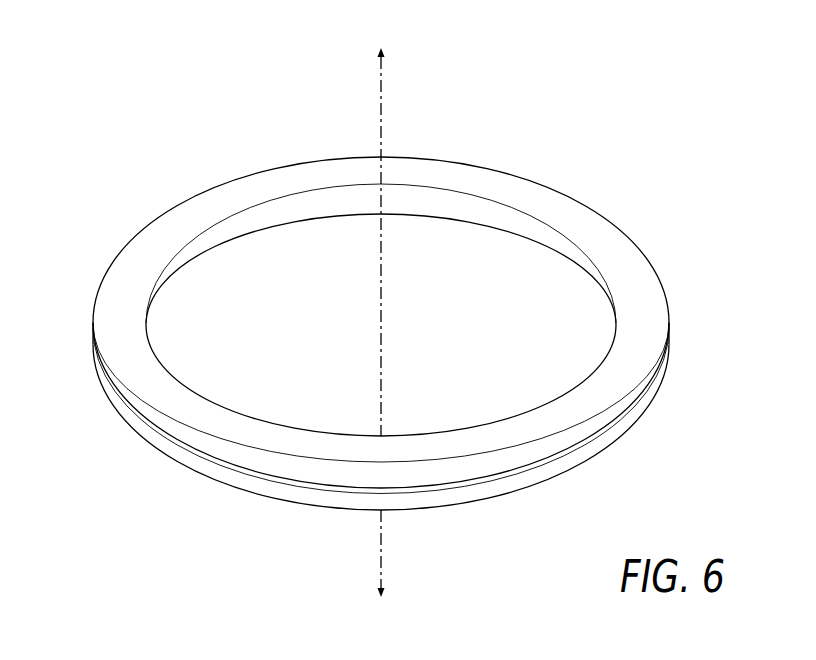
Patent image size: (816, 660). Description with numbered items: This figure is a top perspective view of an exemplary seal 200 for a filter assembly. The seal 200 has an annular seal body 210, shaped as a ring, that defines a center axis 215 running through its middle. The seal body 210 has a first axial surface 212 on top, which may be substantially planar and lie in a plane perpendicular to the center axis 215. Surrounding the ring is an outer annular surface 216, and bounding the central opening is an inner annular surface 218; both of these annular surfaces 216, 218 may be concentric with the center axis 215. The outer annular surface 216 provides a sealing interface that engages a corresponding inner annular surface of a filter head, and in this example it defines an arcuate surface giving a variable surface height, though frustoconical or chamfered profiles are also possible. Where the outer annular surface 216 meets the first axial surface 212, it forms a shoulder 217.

The seal 200 is at (83, 60).
The seal body 210 is at (560, 190).
The first axial surface 212 is at (637, 281).
The center axis 215 is at (383, 72).
The outer annular surface 216 is at (689, 338).
The shoulder 217 is at (141, 388).
The inner annular surface 218 is at (216, 236).